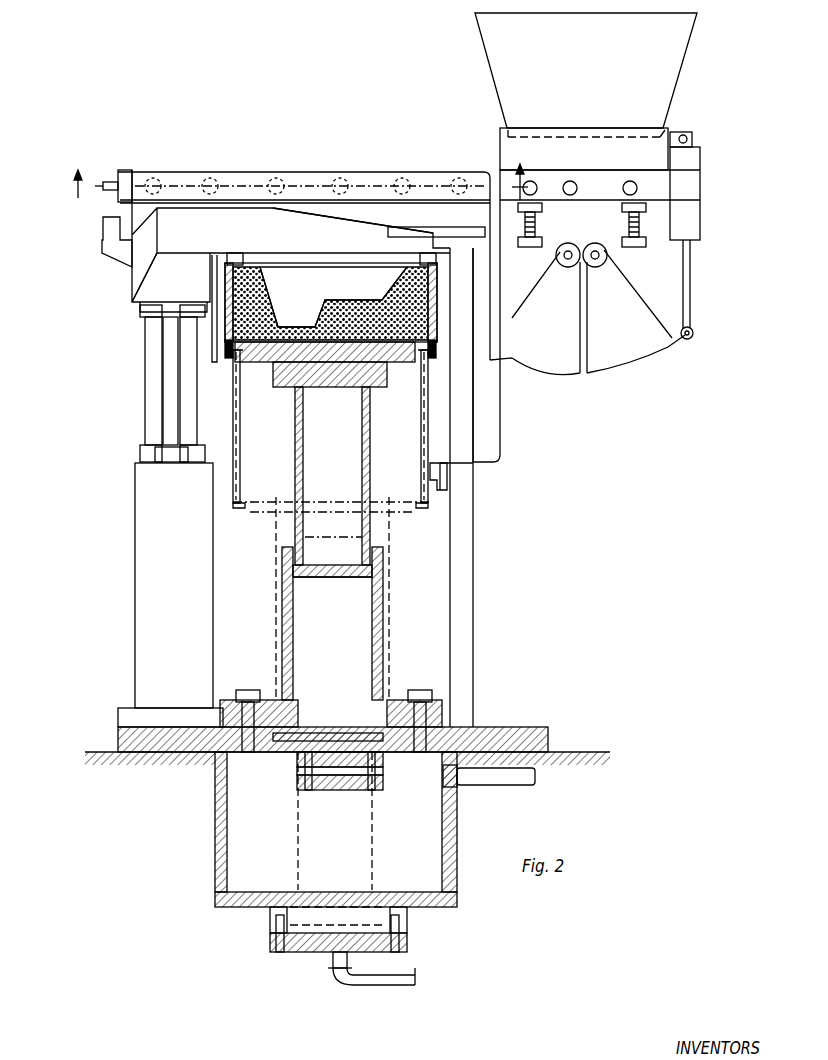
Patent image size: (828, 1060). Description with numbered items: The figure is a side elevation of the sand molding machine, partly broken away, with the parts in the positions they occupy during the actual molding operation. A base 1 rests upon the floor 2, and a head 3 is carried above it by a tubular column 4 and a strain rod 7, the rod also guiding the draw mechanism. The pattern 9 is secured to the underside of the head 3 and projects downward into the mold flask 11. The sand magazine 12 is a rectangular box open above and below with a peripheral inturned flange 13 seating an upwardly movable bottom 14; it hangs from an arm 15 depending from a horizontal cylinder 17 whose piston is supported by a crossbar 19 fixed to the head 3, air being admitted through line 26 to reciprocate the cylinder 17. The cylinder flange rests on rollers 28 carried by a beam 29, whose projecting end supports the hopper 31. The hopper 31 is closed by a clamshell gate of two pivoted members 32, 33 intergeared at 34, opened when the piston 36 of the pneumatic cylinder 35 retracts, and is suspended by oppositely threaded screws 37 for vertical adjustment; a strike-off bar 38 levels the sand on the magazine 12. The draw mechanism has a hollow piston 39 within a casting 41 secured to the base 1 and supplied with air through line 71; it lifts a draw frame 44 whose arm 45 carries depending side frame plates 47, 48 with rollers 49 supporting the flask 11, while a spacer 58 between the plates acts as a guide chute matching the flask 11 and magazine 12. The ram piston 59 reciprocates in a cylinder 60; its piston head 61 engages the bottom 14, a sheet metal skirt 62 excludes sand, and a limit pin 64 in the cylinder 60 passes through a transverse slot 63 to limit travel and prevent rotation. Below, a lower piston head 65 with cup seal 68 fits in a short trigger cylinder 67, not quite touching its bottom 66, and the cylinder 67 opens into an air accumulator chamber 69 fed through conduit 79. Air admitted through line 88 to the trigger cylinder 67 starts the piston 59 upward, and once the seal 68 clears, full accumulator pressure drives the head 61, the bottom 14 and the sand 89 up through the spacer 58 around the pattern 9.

The base 1 is at (527, 727).
The floor 2 is at (582, 750).
The head 3 is at (130, 213).
The tubular column 4 is at (465, 562).
The strain rod 7 is at (168, 385).
The pattern 9 is at (305, 311).
The mold flask 11 is at (428, 305).
The sand magazine 12 is at (232, 475).
The peripheral inturned flange 13 is at (247, 505).
The upwardly movable bottom 14 is at (402, 363).
The arm 15 is at (500, 378).
The axially reciprocable cylinder 17 is at (240, 172).
The crossbar 19 is at (126, 170).
The air line 26 is at (110, 182).
The rollers 28 is at (632, 192).
The beam 29 is at (660, 182).
The hopper 31 is at (665, 88).
The gate member 32 is at (565, 362).
The gate member 33 is at (612, 358).
The gearing 34 is at (578, 246).
The pneumatic cylinder 35 is at (688, 165).
The piston 36 is at (690, 290).
The screws 37 is at (536, 224).
The sand strike-off bar 38 is at (495, 366).
The hollow piston 39 is at (153, 340).
The casting 41 is at (143, 600).
The draw frame 44 is at (138, 275).
The arm 45 is at (349, 234).
The side frame plate 47 is at (213, 341).
The side frame plate 48 is at (437, 382).
The rollers 49 is at (229, 360).
The spacer 58 is at (243, 372).
The ram piston 59 is at (372, 530).
The cylinder 60 is at (385, 625).
The piston head 61 is at (290, 378).
The sheet metal skirt 62 is at (383, 545).
The transverse slot 63 is at (348, 665).
The limit pin 64 is at (343, 735).
The lower piston head 65 is at (378, 785).
The bottom 66 is at (308, 940).
The trigger cylinder 67 is at (400, 920).
The cup seal 68 is at (290, 775).
The air accumulator chamber 69 is at (215, 840).
The air line 71 is at (103, 233).
The conduit 79 is at (493, 786).
The line 88 is at (378, 980).
The sand 89 is at (347, 312).